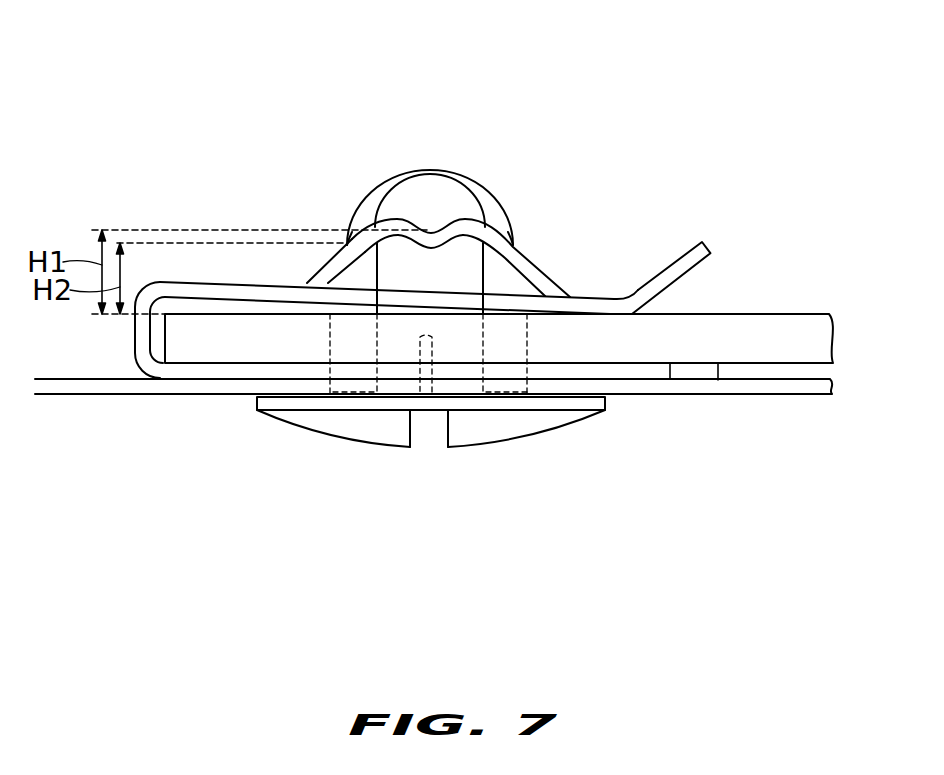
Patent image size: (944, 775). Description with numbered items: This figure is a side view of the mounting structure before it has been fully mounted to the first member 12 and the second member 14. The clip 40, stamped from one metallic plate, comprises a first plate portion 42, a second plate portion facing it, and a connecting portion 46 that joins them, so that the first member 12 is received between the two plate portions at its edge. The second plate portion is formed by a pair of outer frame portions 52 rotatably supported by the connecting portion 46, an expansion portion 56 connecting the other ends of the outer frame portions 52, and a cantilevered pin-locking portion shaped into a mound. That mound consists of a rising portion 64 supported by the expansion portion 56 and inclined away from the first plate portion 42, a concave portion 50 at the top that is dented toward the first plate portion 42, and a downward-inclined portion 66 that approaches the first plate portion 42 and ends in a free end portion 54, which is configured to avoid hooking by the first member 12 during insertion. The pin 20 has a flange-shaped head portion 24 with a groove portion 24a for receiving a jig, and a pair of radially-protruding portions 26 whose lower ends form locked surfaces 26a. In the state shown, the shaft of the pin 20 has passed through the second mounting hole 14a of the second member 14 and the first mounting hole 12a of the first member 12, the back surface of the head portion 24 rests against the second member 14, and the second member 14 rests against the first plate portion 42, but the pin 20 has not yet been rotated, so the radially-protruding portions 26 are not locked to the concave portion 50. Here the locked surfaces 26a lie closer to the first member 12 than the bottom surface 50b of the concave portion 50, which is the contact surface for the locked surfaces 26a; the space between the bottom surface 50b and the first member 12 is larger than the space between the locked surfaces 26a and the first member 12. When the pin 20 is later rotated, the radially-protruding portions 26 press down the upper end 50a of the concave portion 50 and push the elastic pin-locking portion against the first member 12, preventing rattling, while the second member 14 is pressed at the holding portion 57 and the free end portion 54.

The first member 12 is at (803, 323).
The first mounting hole 12a is at (527, 337).
The second member 14 is at (800, 388).
The second mounting hole 14a is at (330, 385).
The pin 20 is at (439, 282).
The head portion 24 is at (431, 441).
The groove portion 24a is at (446, 434).
The radially-protruding portions 26 is at (365, 203).
The locked surfaces 26a is at (347, 245).
The clip 40 is at (413, 333).
The first plate portion 42 is at (670, 366).
The connecting portion 46 is at (135, 334).
The concave portion 50 is at (438, 177).
The upper end 50a is at (367, 207).
The bottom surface 50b is at (430, 232).
The outer frame portions 52 is at (360, 287).
The free end portion 54 is at (245, 310).
The expansion portion 56 is at (700, 262).
The holding portion 57 is at (620, 297).
The rising portion 64 is at (532, 273).
The downward-inclined portion 66 is at (330, 275).